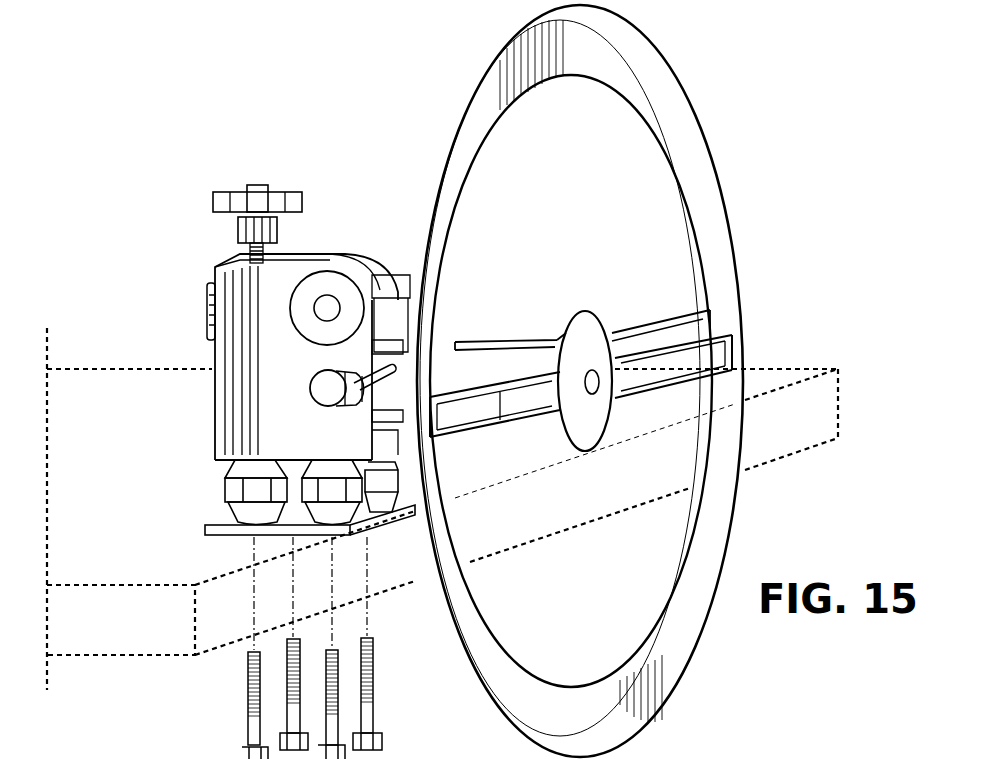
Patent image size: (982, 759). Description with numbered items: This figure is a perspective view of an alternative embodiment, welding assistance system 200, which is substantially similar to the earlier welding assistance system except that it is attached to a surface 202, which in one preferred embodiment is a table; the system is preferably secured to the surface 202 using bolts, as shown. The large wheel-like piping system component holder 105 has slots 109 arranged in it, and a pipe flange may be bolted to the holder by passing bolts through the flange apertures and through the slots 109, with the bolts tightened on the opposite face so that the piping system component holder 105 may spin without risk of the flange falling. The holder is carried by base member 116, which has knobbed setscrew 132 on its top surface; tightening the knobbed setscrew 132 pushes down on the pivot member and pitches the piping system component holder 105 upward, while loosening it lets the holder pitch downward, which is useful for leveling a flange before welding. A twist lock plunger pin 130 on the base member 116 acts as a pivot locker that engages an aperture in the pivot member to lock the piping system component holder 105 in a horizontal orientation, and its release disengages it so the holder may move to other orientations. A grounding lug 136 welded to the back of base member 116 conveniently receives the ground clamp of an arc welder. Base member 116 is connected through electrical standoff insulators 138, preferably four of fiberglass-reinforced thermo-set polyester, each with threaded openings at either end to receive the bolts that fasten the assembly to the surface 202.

The welding assistance system 200 is at (776, 62).
The piping system component holder 105 is at (705, 160).
The slots 109 is at (690, 362).
The surface 202 is at (838, 404).
The base member 116 is at (215, 432).
The grounding lug 136 is at (207, 312).
The knobbed setscrew 132 is at (247, 186).
The twist lock plunger pin 130 is at (337, 400).
The electrical standoff insulators 138 is at (205, 515).